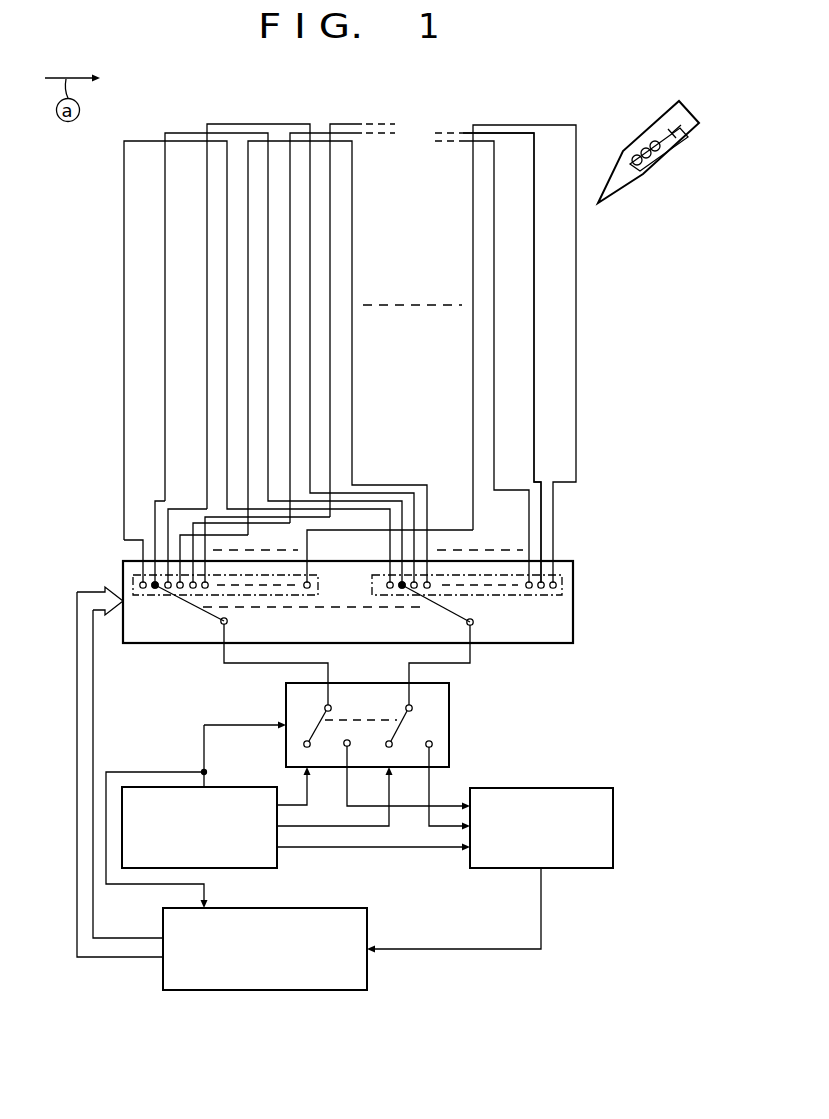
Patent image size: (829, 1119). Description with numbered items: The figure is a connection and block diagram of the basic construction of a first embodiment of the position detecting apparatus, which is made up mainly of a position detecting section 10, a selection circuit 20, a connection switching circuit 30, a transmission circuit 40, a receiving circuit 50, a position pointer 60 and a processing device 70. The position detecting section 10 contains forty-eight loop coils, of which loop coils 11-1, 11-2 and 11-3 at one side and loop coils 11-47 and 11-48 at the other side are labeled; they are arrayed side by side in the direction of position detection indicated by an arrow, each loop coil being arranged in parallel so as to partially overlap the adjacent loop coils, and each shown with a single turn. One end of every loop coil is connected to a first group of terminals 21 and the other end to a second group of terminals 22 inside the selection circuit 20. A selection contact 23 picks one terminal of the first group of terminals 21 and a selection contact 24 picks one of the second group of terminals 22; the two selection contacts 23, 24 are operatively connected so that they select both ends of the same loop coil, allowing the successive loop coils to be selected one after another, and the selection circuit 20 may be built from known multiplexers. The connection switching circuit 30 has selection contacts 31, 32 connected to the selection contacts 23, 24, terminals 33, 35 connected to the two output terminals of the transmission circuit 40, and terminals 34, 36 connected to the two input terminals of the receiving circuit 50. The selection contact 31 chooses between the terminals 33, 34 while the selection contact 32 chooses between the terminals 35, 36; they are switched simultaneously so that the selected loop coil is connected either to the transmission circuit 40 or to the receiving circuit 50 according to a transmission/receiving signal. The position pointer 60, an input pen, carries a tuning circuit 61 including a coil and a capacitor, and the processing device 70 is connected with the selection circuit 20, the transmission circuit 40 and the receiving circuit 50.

The position detecting section 10 is at (114, 254).
The loop coil 11-1 is at (140, 140).
The loop coil 11-2 is at (188, 133).
The loop coil 11-3 is at (255, 124).
The loop coil 11-47 is at (483, 126).
The loop coil 11-48 is at (540, 125).
The selection circuit 20 is at (574, 620).
The first group of terminals 21 is at (136, 575).
The second group of terminals 22 is at (562, 578).
The selection contact 23 is at (188, 607).
The selection contact 24 is at (460, 612).
The connection switching circuit 30 is at (449, 697).
The selection contact 31 is at (313, 720).
The selection contact 32 is at (403, 715).
The terminal 33 is at (303, 746).
The terminal 34 is at (347, 750).
The terminal 35 is at (387, 750).
The terminal 36 is at (427, 750).
The transmission circuit 40 is at (278, 862).
The receiving circuit 50 is at (572, 786).
The position pointer 60 is at (668, 110).
The tuning circuit 61 is at (665, 168).
The processing device 70 is at (367, 922).